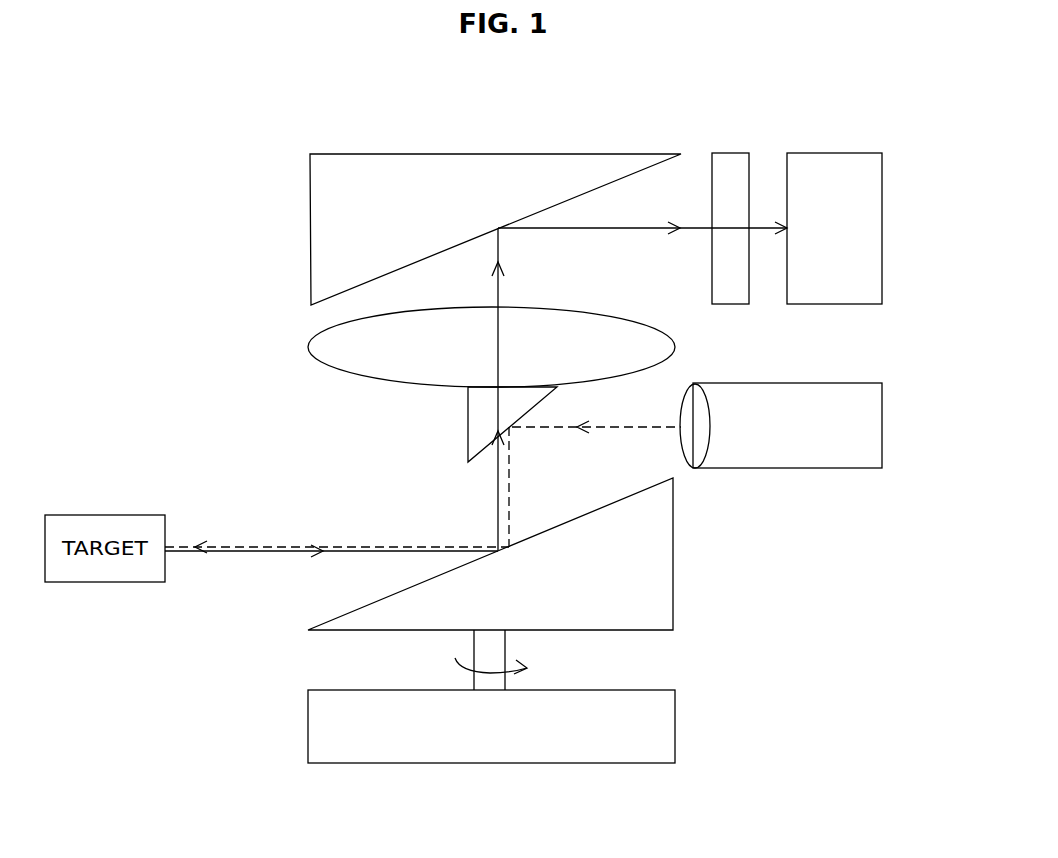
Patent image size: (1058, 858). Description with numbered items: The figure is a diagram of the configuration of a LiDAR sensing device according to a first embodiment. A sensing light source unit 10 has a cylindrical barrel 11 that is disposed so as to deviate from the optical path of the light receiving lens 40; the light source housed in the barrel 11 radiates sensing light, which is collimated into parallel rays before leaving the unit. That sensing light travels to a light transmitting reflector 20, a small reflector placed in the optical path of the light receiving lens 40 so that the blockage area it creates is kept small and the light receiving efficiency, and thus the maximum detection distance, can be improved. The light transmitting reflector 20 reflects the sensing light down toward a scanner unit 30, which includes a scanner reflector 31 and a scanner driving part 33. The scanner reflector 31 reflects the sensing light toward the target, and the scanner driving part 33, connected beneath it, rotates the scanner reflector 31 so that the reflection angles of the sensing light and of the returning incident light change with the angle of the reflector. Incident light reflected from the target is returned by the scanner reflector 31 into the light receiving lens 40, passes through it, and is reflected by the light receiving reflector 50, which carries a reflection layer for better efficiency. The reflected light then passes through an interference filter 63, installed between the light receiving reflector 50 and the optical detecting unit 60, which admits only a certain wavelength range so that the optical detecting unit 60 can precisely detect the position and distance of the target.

The sensing light source unit 10 is at (820, 394).
The barrel 11 is at (858, 383).
The light transmitting reflector 20 is at (468, 425).
The scanner unit 30 is at (557, 620).
The scanner reflector 31 is at (673, 602).
The scanner driving part 33 is at (675, 717).
The light receiving lens 40 is at (323, 328).
The light receiving reflector 50 is at (590, 152).
The optical detecting unit 60 is at (845, 152).
The interference filter 63 is at (732, 152).